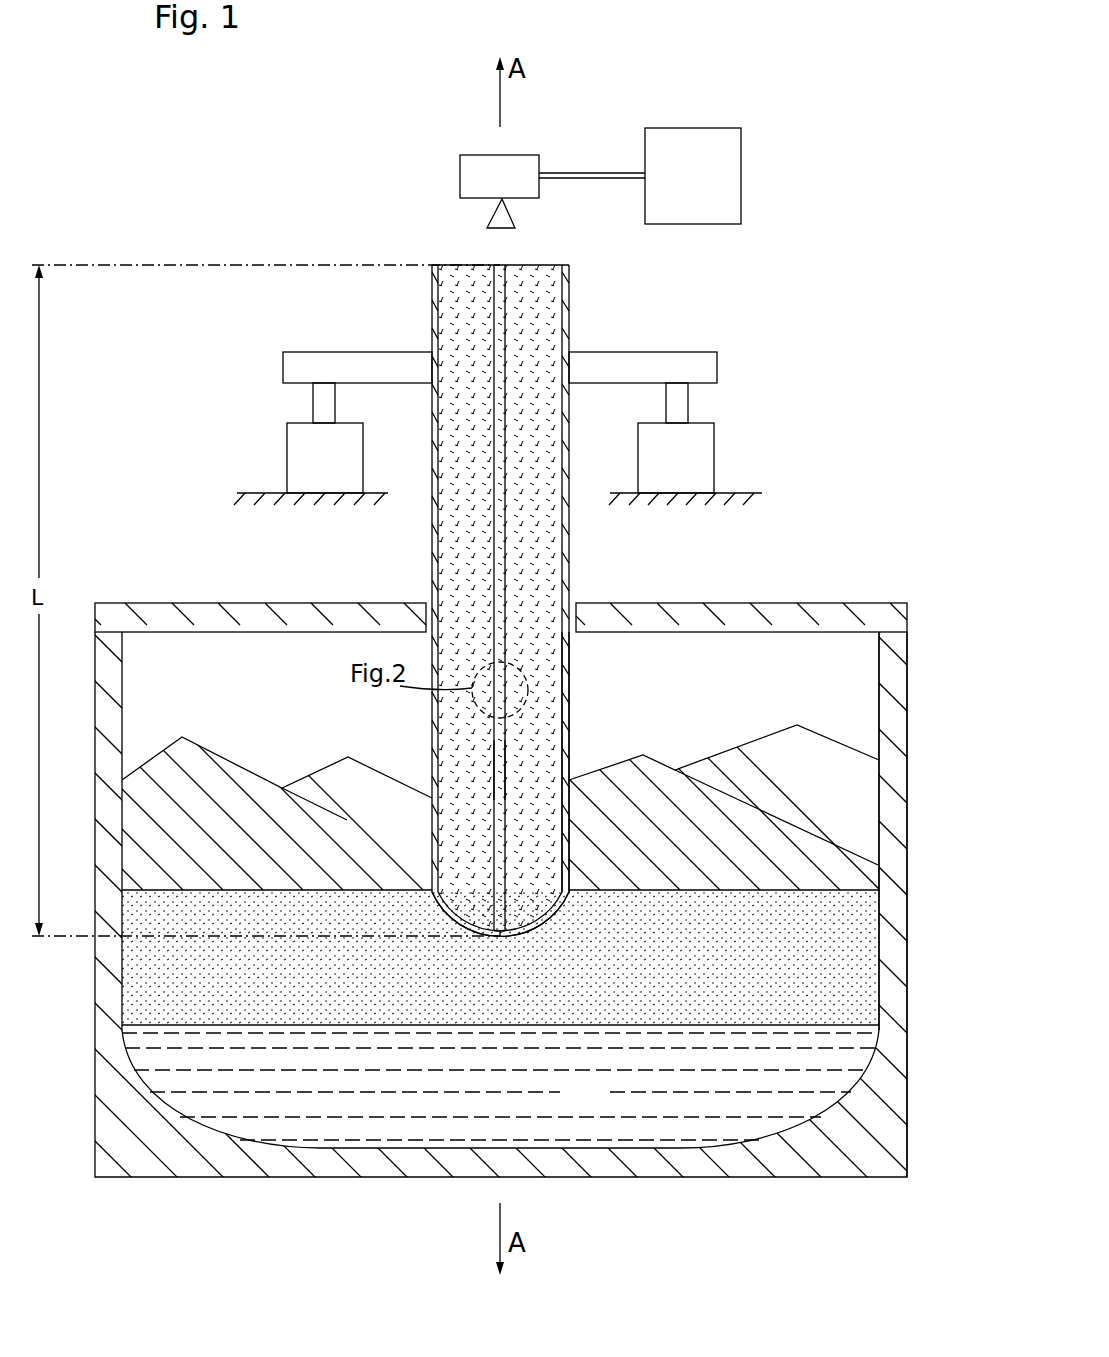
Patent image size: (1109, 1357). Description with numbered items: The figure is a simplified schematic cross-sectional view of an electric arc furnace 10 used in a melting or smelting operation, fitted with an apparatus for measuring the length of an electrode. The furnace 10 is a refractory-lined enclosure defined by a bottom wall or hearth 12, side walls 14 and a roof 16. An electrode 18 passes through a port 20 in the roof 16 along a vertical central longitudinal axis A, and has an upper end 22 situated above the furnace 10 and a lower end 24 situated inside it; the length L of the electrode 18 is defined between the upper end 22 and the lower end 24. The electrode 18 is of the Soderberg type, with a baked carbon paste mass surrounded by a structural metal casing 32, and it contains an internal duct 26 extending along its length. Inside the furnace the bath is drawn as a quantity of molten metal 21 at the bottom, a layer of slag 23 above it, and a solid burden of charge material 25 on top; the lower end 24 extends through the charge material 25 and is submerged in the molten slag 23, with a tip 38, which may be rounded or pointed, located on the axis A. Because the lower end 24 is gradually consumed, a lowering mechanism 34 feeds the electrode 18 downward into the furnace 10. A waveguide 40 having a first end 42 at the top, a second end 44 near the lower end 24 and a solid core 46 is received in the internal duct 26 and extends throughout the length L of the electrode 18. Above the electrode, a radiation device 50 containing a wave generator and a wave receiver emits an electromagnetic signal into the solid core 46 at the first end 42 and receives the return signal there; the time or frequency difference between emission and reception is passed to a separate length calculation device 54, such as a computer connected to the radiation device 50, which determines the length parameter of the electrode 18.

The electric arc furnace 10 is at (870, 584).
The bottom wall or hearth 12 is at (469, 1178).
The side walls 14 is at (889, 779).
The roof 16 is at (770, 603).
The electrode 18 is at (568, 562).
The port 20 is at (428, 607).
The molten metal 21 is at (598, 1105).
The upper end 22 is at (567, 264).
The slag 23 is at (741, 966).
The lower end 24 is at (553, 917).
The charge material 25 is at (628, 760).
The internal duct 26 is at (508, 760).
The structural metal casing 32 is at (570, 698).
The lowering mechanism 34 is at (700, 453).
The tip 38 is at (503, 937).
The waveguide 40 is at (500, 410).
The first end 42 is at (500, 264).
The second end 44 is at (498, 937).
The solid core 46 is at (500, 492).
The radiation device 50 is at (468, 177).
The length calculation device 54 is at (728, 151).